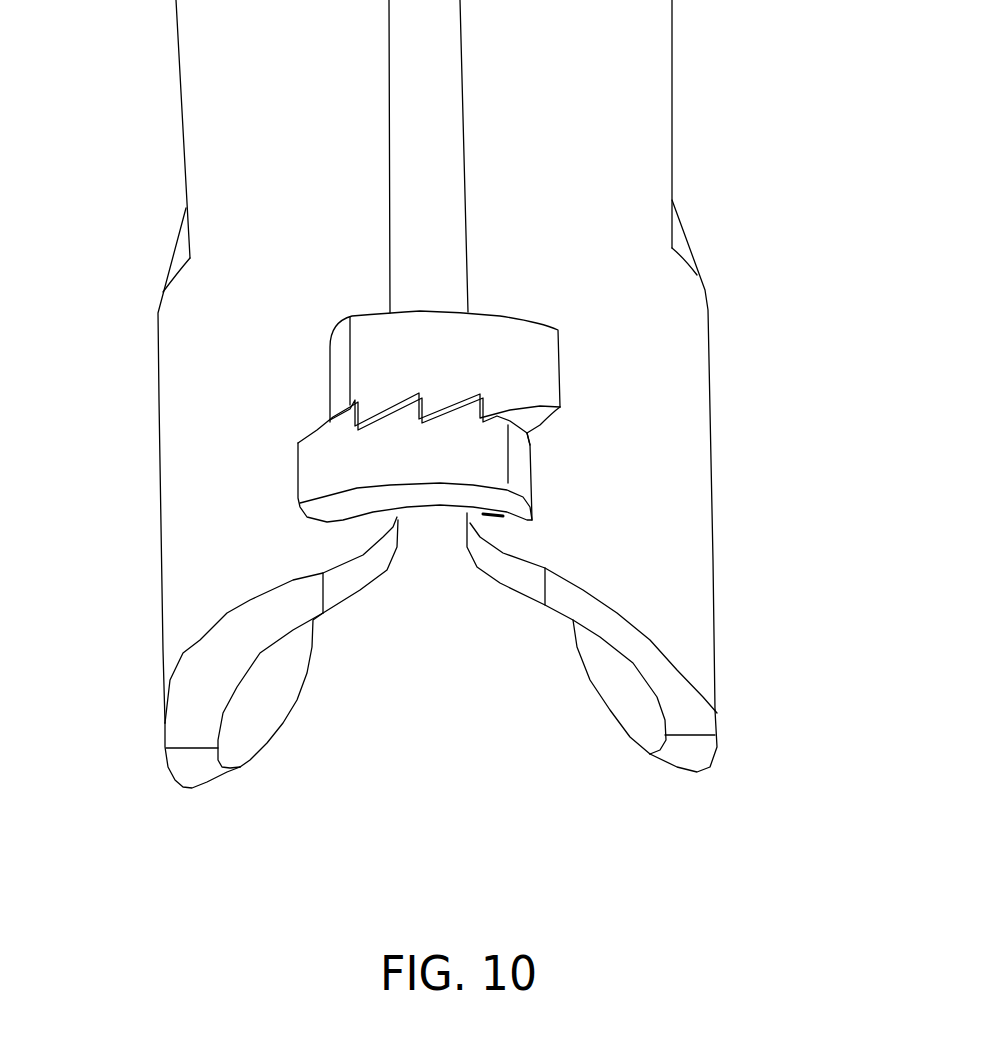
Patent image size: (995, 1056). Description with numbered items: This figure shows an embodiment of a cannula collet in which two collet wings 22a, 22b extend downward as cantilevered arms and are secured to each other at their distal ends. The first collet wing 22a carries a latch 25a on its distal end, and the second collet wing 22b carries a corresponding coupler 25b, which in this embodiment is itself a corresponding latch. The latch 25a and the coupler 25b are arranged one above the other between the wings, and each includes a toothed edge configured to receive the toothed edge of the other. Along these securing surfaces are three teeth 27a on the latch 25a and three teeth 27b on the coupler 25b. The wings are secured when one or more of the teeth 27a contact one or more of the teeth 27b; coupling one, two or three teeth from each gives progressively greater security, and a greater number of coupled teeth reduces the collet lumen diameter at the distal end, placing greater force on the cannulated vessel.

The collet wing 22a is at (145, 161).
The collet wing 22b is at (745, 241).
The latch 25a is at (421, 256).
The coupler 25b is at (552, 520).
The teeth 27a is at (476, 368).
The teeth 27b is at (407, 460).